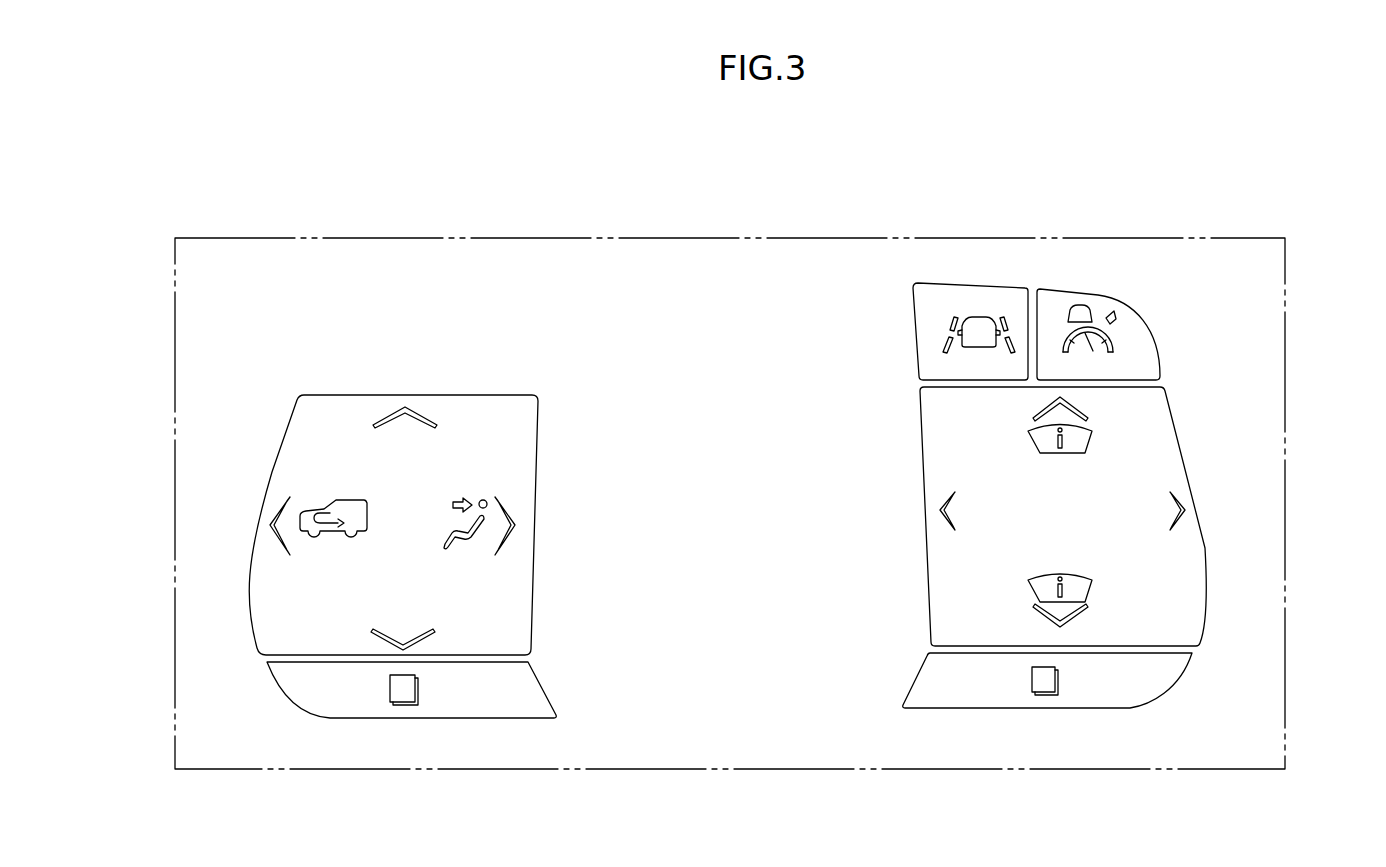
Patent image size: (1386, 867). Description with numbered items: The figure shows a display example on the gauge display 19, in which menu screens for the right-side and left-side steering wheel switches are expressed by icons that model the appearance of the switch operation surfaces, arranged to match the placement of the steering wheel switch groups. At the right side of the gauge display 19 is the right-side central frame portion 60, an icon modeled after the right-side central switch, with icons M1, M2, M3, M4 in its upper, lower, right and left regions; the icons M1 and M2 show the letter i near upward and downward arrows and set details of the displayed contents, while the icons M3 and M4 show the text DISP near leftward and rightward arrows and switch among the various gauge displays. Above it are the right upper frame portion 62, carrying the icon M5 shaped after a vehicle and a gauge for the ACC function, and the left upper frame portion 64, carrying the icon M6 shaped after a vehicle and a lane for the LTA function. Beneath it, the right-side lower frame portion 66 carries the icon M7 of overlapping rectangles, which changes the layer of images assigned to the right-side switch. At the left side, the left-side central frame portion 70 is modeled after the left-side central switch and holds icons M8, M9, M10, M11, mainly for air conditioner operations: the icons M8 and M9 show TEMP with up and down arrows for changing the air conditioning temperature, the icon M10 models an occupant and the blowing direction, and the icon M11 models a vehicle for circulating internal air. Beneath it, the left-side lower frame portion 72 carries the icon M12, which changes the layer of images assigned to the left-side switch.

The gauge display 19 is at (1072, 238).
The right-side central frame portion 60 is at (1183, 447).
The right upper frame portion 62 is at (1158, 350).
The left upper frame portion 64 is at (915, 350).
The right-side lower frame portion 66 is at (975, 708).
The left-side central frame portion 70 is at (272, 470).
The left-side lower frame portion 72 is at (335, 718).
The icon M1 is at (1095, 421).
The icon M2 is at (1093, 592).
The icon M3 is at (1178, 495).
The icon M4 is at (942, 497).
The icon M5 is at (1115, 328).
The icon M6 is at (945, 333).
The icon M7 is at (1060, 680).
The icon M8 is at (425, 405).
The icon M9 is at (447, 612).
The icon M10 is at (512, 507).
The icon M11 is at (270, 500).
The icon M12 is at (425, 690).